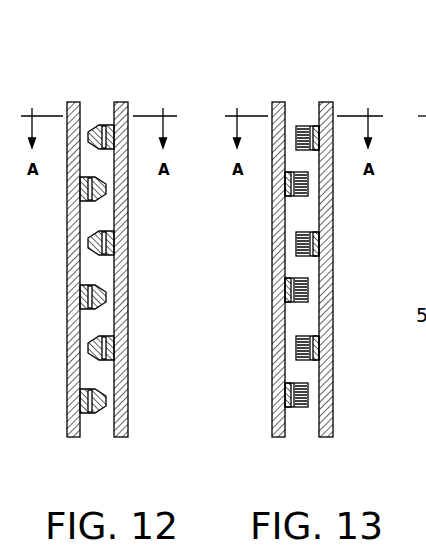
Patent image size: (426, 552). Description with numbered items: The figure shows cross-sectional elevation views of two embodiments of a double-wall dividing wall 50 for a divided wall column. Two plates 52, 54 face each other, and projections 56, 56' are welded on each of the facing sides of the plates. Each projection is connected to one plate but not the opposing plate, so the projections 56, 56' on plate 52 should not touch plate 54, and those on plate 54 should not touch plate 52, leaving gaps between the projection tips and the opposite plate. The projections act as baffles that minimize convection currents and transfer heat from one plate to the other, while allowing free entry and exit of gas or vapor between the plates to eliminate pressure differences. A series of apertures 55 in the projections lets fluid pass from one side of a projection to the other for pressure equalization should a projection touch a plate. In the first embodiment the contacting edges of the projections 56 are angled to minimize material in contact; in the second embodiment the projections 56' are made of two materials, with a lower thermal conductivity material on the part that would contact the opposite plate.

In FIG. 12, the double-wall dividing wall 50 is at (81, 70).
In FIG. 13, the double-wall dividing wall 50 is at (338, 66).
In FIG. 12, the plate 52 is at (67, 279).
In FIG. 13, the plate 52 is at (272, 223).
In FIG. 12, the plate 54 is at (128, 328).
In FIG. 13, the plate 54 is at (333, 268).
In FIG. 12, the apertures 55 is at (113, 240).
In FIG. 13, the apertures 55 is at (307, 292).
In FIG. 12, the projections 56 is at (129, 259).
In FIG. 13, the projections 56' is at (315, 261).